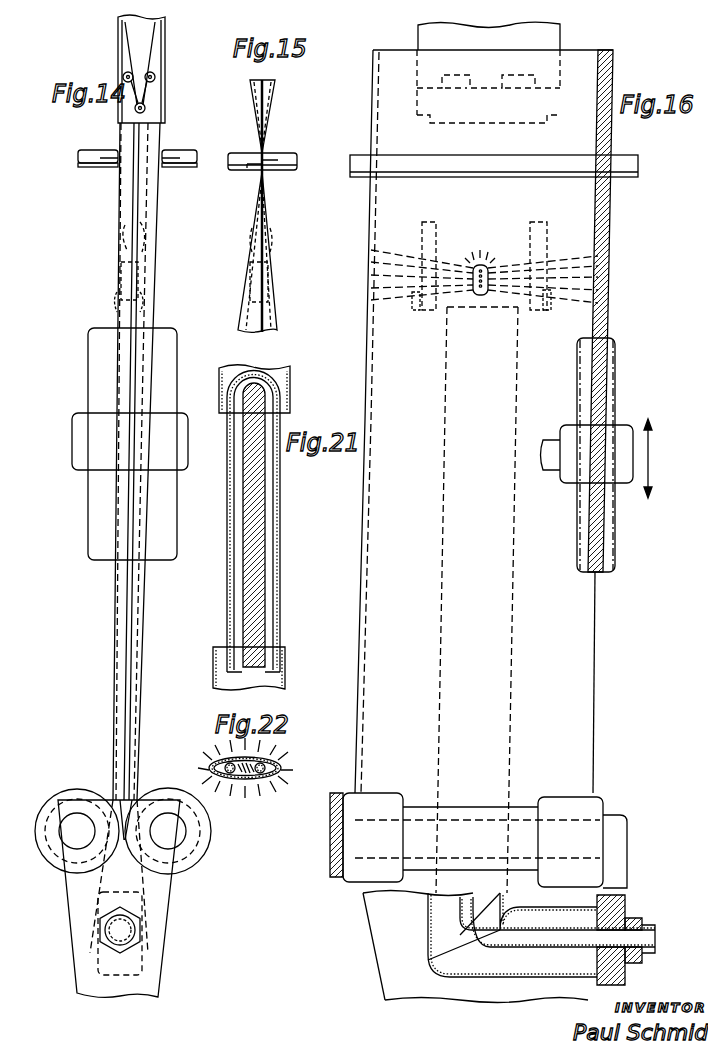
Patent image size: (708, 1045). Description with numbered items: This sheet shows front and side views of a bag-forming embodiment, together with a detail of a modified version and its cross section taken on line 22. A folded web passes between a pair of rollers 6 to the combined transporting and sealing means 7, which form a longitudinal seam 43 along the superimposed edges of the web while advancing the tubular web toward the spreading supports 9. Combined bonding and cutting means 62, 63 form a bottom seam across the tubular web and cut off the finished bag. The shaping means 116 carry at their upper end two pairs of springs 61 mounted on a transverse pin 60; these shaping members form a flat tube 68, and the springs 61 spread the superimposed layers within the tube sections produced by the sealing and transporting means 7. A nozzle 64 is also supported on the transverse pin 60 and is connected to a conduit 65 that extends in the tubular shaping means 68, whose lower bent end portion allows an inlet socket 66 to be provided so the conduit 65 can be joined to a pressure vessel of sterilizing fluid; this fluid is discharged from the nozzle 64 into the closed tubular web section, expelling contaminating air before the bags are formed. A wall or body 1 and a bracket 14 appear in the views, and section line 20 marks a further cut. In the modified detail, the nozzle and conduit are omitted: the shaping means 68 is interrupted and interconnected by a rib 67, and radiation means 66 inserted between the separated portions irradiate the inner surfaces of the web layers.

In FIG. 14, the rod / shaft 1 is at (150, 197).
In FIG. 15, the rod / shaft 1 is at (272, 98).
In FIG. 14, the rollers 6 is at (57, 802).
In FIG. 16, the rollers 6 is at (566, 806).
In FIG. 14, the combined transporting and sealing means 7 is at (80, 463).
In FIG. 16, the combined transporting and sealing means 7 is at (610, 566).
In FIG. 14, the spreading supports 9 is at (130, 44).
In FIG. 16, the spreading supports 9 is at (430, 36).
In FIG. 14, the bracket / flange 14 is at (165, 905).
In FIG. 16, the bracket / flange 14 is at (620, 902).
In FIG. 16, the section line 20- 20 is at (376, 683).
In FIG. 21, the section line 22- 22 is at (305, 542).
In FIG. 16, the longitudinal seam 43 is at (606, 336).
In FIG. 14, the transverse pin 60 is at (138, 288).
In FIG. 15, the transverse pin 60 is at (266, 300).
In FIG. 16, the transverse pin 60 is at (444, 310).
In FIG. 14, the springs 61 is at (124, 248).
In FIG. 15, the springs 61 is at (262, 245).
In FIG. 16, the springs 61 is at (424, 224).
In FIG. 14, the combined bonding and cutting means 62 is at (88, 155).
In FIG. 15, the combined bonding and cutting means 62 is at (238, 155).
In FIG. 16, the combined bonding and cutting means 62 is at (622, 163).
In FIG. 14, the combined bonding and cutting means 63 is at (94, 168).
In FIG. 15, the combined bonding and cutting means 63 is at (252, 172).
In FIG. 16, the combined bonding and cutting means 63 is at (622, 178).
In FIG. 16, the nozzle 64 is at (484, 262).
In FIG. 16, the conduit 65 is at (464, 910).
In FIG. 21, the socket 66 is at (280, 494).
In FIG. 22, the socket 66 is at (246, 780).
In FIG. 16, the socket 66 is at (637, 963).
In FIG. 21, the rib 67 is at (255, 618).
In FIG. 22, the rib 67 is at (266, 762).
In FIG. 21, the tubular shaping means 68 is at (290, 392).
In FIG. 22, the tubular shaping means 68 is at (285, 760).
In FIG. 16, the tubular shaping means 68 is at (512, 977).
In FIG. 14, the shaping means 116 is at (116, 300).
In FIG. 16, the shaping means 116 is at (510, 345).